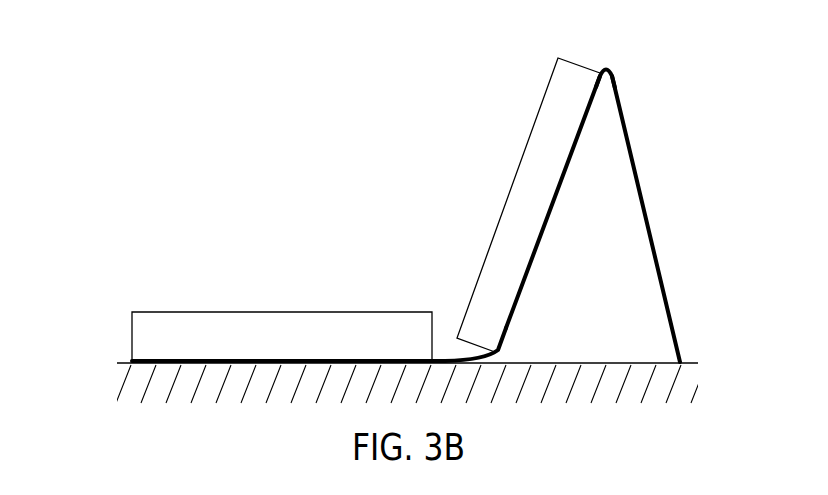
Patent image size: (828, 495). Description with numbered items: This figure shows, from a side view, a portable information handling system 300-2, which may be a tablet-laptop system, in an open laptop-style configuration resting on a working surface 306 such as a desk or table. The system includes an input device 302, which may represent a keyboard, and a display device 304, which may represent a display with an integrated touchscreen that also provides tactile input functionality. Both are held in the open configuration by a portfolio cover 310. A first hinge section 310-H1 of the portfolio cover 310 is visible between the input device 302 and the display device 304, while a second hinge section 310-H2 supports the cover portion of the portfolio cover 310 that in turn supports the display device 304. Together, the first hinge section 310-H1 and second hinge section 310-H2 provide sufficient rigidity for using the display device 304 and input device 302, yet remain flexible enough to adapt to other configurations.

The portable information handling system 300-2 is at (146, 86).
The input device 302 is at (295, 343).
The display device 304 is at (502, 215).
The working surface 306 is at (571, 361).
The portfolio cover 310 is at (655, 250).
The first hinge section 310-H1 is at (454, 351).
The second hinge section 310-H2 is at (605, 57).